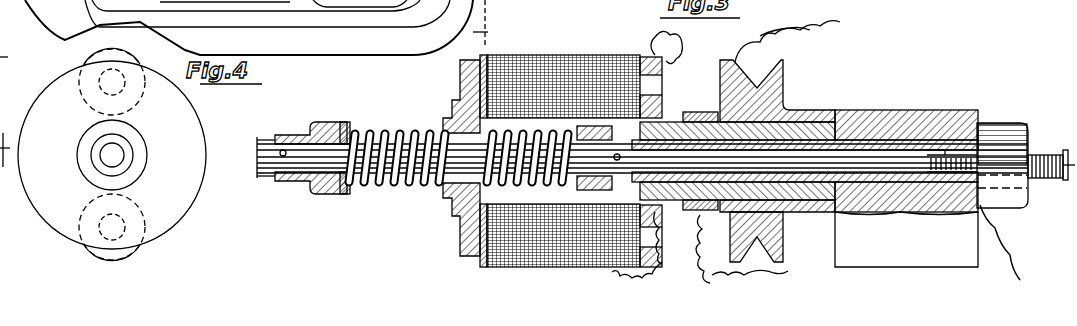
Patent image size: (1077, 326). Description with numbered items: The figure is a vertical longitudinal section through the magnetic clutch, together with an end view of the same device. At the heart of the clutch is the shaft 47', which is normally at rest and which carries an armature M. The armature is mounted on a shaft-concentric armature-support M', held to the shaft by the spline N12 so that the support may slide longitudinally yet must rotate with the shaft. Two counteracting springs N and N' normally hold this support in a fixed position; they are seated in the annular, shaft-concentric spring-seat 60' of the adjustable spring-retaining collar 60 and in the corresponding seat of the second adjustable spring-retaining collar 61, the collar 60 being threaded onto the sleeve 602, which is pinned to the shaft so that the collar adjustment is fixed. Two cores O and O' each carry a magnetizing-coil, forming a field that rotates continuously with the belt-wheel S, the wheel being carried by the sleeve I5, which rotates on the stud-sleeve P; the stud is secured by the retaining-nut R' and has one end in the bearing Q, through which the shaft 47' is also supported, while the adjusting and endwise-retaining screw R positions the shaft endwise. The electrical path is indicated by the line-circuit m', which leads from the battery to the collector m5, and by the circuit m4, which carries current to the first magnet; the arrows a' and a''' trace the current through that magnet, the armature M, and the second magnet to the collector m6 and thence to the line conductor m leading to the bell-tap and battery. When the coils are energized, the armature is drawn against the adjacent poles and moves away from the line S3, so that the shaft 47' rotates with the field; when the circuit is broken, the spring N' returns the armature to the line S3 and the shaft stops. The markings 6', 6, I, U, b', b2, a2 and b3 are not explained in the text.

The line S3 is at (467, 24).
The belt-wheel S is at (783, 70).
The spring N' is at (642, 150).
The sleeve I5 is at (818, 122).
The stud-sleeve P is at (885, 135).
The contact block 6' is at (699, 146).
The core O is at (667, 87).
The core O' is at (666, 236).
The upper coil b2 is at (553, 55).
The coil winding a2 is at (585, 55).
The lower coil b3 is at (625, 262).
The armature M is at (450, 163).
The armature-support M' is at (439, 153).
The arrow a' is at (424, 199).
The adjustable spring-retaining collar 61 is at (580, 192).
The bearing b' is at (618, 201).
The arrow a''' is at (501, 200).
The sleeve 602 is at (288, 135).
The adjustable spring-retaining collar 60 is at (311, 197).
The spring-seat 60' is at (361, 166).
The shaft 47' is at (261, 190).
The spring N is at (458, 139).
The spline N12 is at (430, 120).
The bearing Q is at (950, 110).
The adjusting and endwise-retaining screw R is at (1051, 179).
The retaining-nut R' is at (927, 242).
The circuit m4 is at (655, 37).
The arrow U is at (758, 45).
The collector m5 is at (787, 41).
The line-circuit m' is at (785, 18).
The collector m6 is at (715, 249).
The contact 6 is at (702, 263).
The insulation I is at (644, 274).
The line conductor m is at (721, 249).